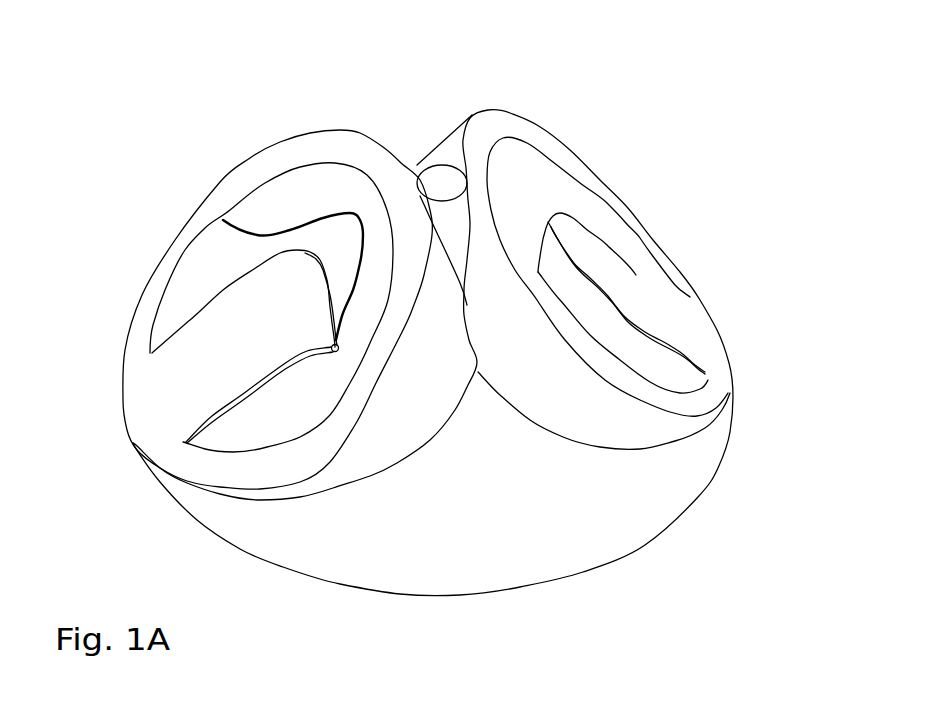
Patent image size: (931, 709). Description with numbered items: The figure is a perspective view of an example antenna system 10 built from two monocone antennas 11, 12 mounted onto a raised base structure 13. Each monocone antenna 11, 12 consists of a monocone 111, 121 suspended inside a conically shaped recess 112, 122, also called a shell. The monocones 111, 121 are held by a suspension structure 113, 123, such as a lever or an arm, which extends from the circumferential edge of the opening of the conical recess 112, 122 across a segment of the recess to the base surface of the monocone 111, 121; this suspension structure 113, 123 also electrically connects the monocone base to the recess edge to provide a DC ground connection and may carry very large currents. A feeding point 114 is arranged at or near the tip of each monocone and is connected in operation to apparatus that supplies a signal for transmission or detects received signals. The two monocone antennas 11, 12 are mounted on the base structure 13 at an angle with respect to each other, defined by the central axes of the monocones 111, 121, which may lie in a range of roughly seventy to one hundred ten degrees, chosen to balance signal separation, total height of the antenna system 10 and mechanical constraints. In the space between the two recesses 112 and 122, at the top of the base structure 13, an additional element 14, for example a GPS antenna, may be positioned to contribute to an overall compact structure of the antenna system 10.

The antenna system 10 is at (147, 38).
The monocone antenna 11 is at (150, 208).
The monocone antenna 12 is at (745, 170).
The base structure 13 is at (537, 550).
The additional element 14 is at (443, 185).
The monocone 111 is at (223, 220).
The conically shaped recess 112 is at (283, 197).
The suspension structure 113 is at (210, 348).
The feeding point 114 is at (336, 352).
The monocone 121 is at (583, 310).
The conically shaped recess 122 is at (550, 190).
The suspension structure 123 is at (637, 283).